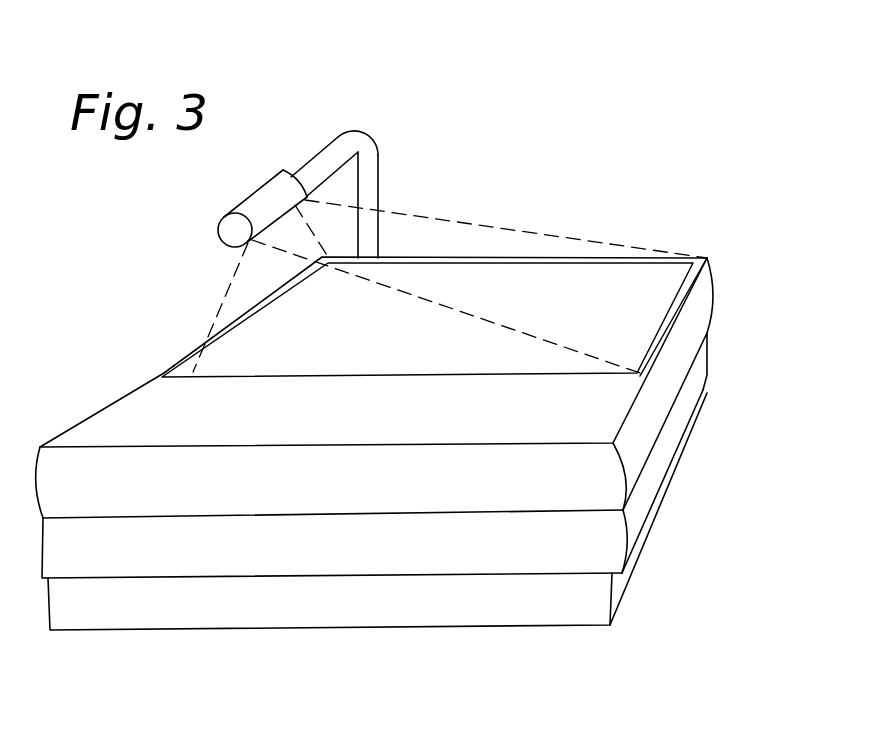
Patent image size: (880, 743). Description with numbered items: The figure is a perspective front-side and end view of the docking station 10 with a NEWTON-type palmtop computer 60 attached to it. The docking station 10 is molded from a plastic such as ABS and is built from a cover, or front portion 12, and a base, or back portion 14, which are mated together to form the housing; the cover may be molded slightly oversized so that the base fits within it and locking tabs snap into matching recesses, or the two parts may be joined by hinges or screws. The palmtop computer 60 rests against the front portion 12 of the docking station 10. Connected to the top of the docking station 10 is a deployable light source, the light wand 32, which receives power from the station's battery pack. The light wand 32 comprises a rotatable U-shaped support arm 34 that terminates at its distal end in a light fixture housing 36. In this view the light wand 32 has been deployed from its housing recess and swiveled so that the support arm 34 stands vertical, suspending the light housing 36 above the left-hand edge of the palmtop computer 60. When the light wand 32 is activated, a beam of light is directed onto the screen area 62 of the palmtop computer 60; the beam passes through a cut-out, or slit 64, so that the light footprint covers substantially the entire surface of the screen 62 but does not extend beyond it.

The docking station 10 is at (406, 432).
The front portion 12 is at (267, 553).
The back portion 14 is at (397, 600).
The light wand 32 is at (421, 202).
The support arm 34 is at (372, 186).
The light fixture housing 36 is at (252, 208).
The palmtop computer 60 is at (692, 312).
The screen area 62 is at (555, 297).
The slit 64 is at (242, 252).